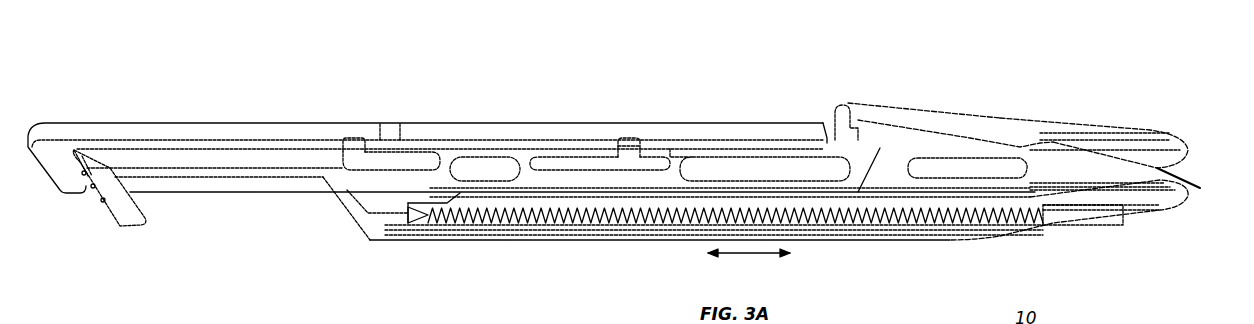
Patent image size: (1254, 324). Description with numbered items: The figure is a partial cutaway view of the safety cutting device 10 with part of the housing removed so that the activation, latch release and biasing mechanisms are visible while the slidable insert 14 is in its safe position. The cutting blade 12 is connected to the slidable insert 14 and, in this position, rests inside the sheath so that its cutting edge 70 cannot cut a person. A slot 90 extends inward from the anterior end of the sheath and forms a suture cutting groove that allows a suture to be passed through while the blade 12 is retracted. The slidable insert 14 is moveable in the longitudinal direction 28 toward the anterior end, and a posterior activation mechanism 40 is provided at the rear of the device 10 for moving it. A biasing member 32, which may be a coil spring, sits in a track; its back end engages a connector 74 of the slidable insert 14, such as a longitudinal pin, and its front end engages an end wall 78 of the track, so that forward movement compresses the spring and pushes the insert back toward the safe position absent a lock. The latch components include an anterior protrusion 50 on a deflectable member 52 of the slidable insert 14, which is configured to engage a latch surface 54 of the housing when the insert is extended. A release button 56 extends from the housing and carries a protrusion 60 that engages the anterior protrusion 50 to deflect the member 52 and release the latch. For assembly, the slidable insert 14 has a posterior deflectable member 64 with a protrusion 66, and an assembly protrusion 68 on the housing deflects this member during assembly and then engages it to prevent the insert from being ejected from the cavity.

The safety cutting device 10 is at (1010, 70).
The cutting blade 12 is at (1073, 170).
The slidable insert 14 is at (682, 155).
The longitudinal direction 28 is at (753, 257).
The biasing member 32 is at (943, 227).
The posterior activation mechanism 40 is at (127, 222).
The anterior protrusion 50 is at (632, 135).
The deflectable member 52 is at (597, 155).
The latch surface 54 is at (828, 132).
The release button 56 is at (910, 113).
The protrusion 60 is at (847, 103).
The posterior deflectable member 64 is at (425, 153).
The protrusion 66 is at (352, 147).
The assembly protrusion 68 is at (342, 147).
The cutting edge 70 is at (1113, 190).
The connector 74 is at (393, 217).
The end wall 78 is at (1030, 220).
The slot 90 is at (1200, 188).